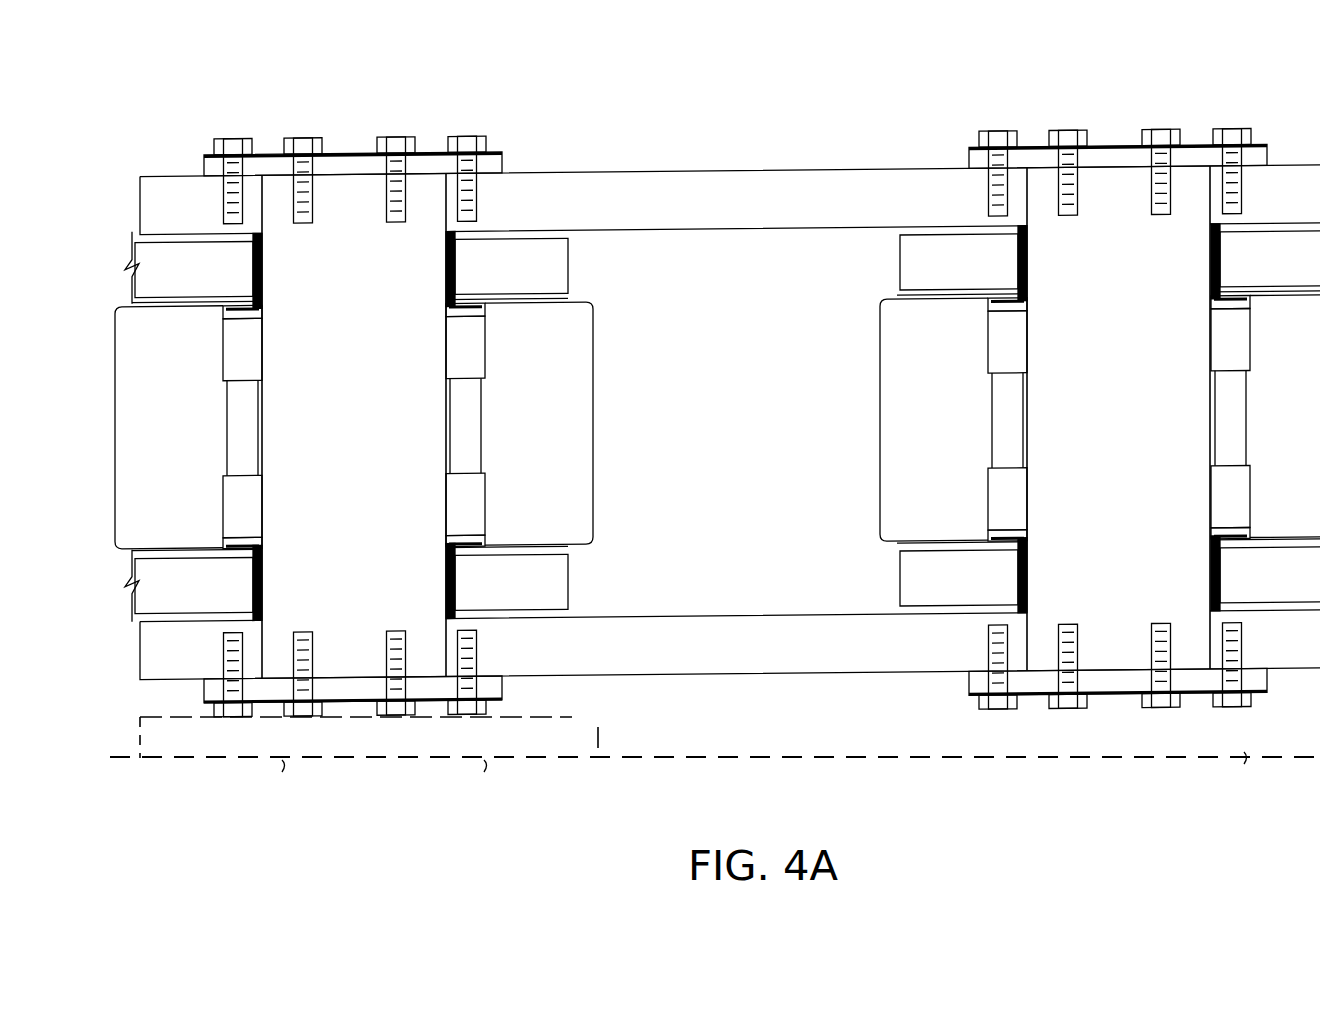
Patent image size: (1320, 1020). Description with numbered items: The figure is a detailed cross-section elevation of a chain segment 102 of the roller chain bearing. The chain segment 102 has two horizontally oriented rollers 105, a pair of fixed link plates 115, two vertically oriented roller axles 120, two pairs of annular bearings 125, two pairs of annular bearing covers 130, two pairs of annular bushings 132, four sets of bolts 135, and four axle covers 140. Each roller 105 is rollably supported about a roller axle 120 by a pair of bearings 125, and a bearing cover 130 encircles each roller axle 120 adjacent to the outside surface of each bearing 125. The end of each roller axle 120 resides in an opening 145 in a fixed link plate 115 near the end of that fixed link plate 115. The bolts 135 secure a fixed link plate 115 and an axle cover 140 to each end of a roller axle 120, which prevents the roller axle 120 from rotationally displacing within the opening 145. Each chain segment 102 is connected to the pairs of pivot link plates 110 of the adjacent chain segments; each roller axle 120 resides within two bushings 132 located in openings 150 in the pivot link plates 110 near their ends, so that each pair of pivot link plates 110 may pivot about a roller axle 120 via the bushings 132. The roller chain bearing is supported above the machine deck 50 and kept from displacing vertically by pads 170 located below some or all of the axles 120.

The chain segment 102 is at (757, 55).
The roller 105 is at (182, 438).
The pivot link plate 110 is at (194, 288).
The fixed link plate 115 is at (190, 218).
The roller axle 120 is at (361, 426).
The annular bearing 125 is at (252, 363).
The annular bearing cover 130 is at (264, 311).
The annular bushing 132 is at (1246, 566).
The bolt 135 is at (255, 132).
The axle cover 140 is at (358, 174).
The opening in fixed link plate 145 is at (268, 216).
The opening in pivot link plate 150 is at (440, 276).
The pad 170 is at (590, 726).
The machine deck 50 is at (888, 765).